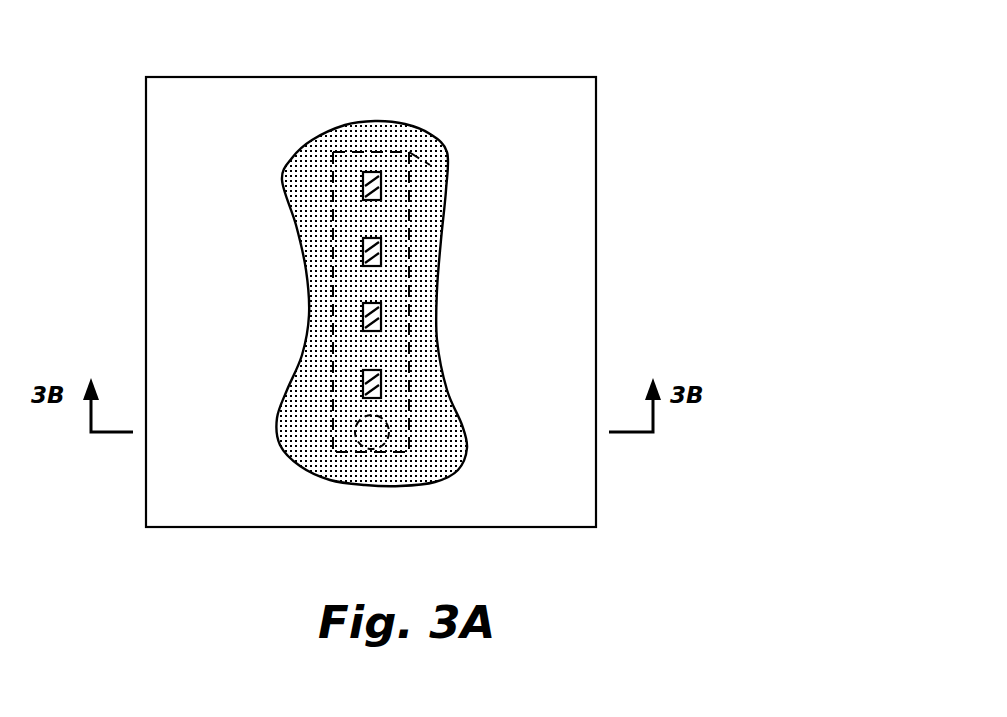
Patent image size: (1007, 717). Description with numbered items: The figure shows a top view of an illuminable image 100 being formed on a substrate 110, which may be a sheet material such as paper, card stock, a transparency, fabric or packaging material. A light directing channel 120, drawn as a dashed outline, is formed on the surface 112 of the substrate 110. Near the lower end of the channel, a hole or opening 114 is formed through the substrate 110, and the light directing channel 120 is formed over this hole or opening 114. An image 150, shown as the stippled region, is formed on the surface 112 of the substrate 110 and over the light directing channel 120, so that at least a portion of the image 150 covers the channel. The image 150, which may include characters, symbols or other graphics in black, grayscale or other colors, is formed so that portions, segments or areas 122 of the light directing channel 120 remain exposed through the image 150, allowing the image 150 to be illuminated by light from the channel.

The illuminable image 100 is at (410, 265).
The substrate 110 is at (587, 148).
The surface 112 is at (563, 508).
The hole or opening 114 is at (388, 440).
The light directing channel 120 is at (447, 158).
The portions, segments or areas 122 is at (381, 256).
The image 150 is at (268, 161).